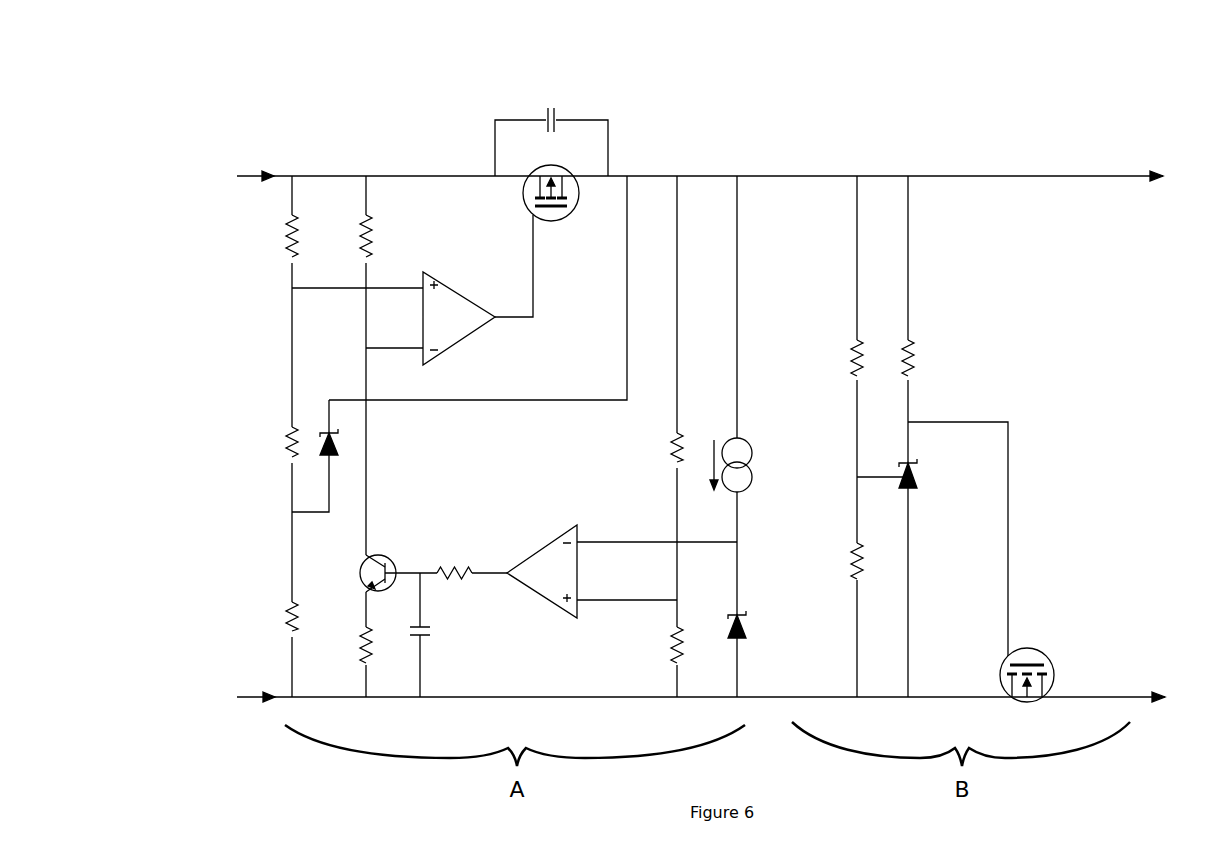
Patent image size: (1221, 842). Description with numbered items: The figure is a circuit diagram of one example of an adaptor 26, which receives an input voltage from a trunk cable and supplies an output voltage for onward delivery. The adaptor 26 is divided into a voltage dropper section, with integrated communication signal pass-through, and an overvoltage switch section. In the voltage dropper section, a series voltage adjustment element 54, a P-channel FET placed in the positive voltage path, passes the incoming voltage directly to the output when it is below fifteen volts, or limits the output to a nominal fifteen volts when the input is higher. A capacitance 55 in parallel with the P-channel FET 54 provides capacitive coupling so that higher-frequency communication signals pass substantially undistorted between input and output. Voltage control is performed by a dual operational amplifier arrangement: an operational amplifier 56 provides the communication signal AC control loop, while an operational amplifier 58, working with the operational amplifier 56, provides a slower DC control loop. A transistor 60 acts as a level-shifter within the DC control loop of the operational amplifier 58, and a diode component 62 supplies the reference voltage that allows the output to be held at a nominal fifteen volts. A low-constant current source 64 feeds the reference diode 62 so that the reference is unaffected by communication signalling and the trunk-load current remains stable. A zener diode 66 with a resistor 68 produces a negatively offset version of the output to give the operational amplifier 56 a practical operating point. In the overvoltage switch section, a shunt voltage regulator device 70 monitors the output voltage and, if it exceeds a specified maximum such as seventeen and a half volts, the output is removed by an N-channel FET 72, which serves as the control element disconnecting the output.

The adaptor 26 is at (773, 163).
The series voltage adjustment element 54 is at (585, 195).
The capacitance 55 is at (550, 104).
The operational amplifier 56 is at (468, 338).
The operational amplifier 58 is at (552, 533).
The transistor 60 is at (395, 552).
The diode component 62 is at (745, 607).
The low-constant current source 64 is at (745, 433).
The zener diode 66 is at (317, 423).
The resistor 68 is at (283, 620).
The shunt voltage regulator device 70 is at (923, 458).
The N-channel FET 72 is at (1037, 645).